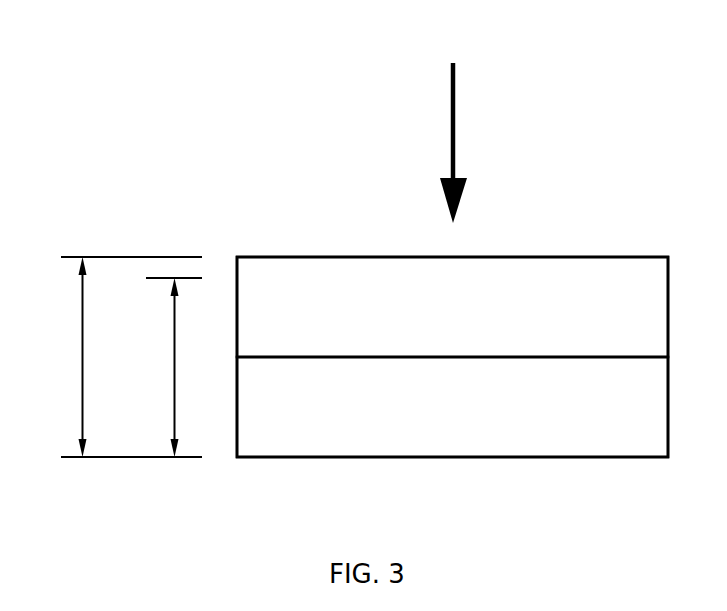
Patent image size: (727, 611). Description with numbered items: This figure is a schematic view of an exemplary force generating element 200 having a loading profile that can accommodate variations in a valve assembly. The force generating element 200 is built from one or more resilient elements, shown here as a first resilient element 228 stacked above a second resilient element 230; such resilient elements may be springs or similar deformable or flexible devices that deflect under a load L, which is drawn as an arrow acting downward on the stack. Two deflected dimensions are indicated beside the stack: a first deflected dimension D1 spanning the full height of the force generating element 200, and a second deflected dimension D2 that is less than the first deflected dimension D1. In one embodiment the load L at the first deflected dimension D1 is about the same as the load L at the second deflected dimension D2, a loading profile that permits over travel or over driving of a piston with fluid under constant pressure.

The force generating element 200 is at (229, 124).
The first resilient element 228 is at (452, 307).
The second resilient element 230 is at (452, 407).
The load L is at (455, 122).
The first deflected dimension D1 is at (126, 357).
The second deflected dimension D2 is at (170, 367).